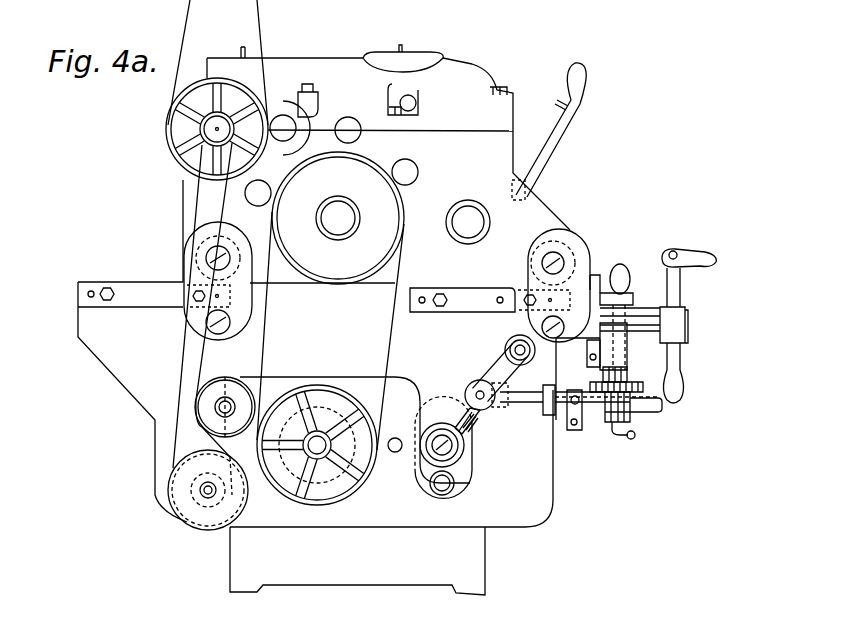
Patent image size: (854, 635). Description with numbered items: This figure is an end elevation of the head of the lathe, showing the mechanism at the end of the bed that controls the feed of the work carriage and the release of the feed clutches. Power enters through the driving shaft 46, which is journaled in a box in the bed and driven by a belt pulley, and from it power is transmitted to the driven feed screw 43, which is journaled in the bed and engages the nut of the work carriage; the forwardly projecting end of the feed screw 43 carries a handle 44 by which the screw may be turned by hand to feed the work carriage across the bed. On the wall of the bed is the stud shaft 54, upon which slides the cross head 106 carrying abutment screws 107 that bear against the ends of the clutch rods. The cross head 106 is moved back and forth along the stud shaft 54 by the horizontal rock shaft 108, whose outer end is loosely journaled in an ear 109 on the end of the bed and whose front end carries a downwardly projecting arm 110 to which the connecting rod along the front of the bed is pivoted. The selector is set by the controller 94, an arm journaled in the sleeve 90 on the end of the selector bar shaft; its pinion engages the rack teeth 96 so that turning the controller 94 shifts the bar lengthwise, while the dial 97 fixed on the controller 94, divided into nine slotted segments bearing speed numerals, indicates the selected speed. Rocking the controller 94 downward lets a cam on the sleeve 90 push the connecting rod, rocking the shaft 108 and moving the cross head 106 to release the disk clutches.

The shaft 46 is at (317, 450).
The stud shaft 54 is at (478, 383).
The cross head 106 is at (492, 367).
The abutment screws 107 is at (515, 338).
The rock shaft 108 is at (525, 405).
The ear 109 is at (557, 427).
The arm 110 is at (577, 410).
The sleeve 90 is at (633, 423).
The rack teeth 96 is at (657, 412).
The dial 97 is at (636, 392).
The feed screw 43 is at (606, 342).
The handle 44 is at (682, 292).
The controller 94 is at (625, 268).